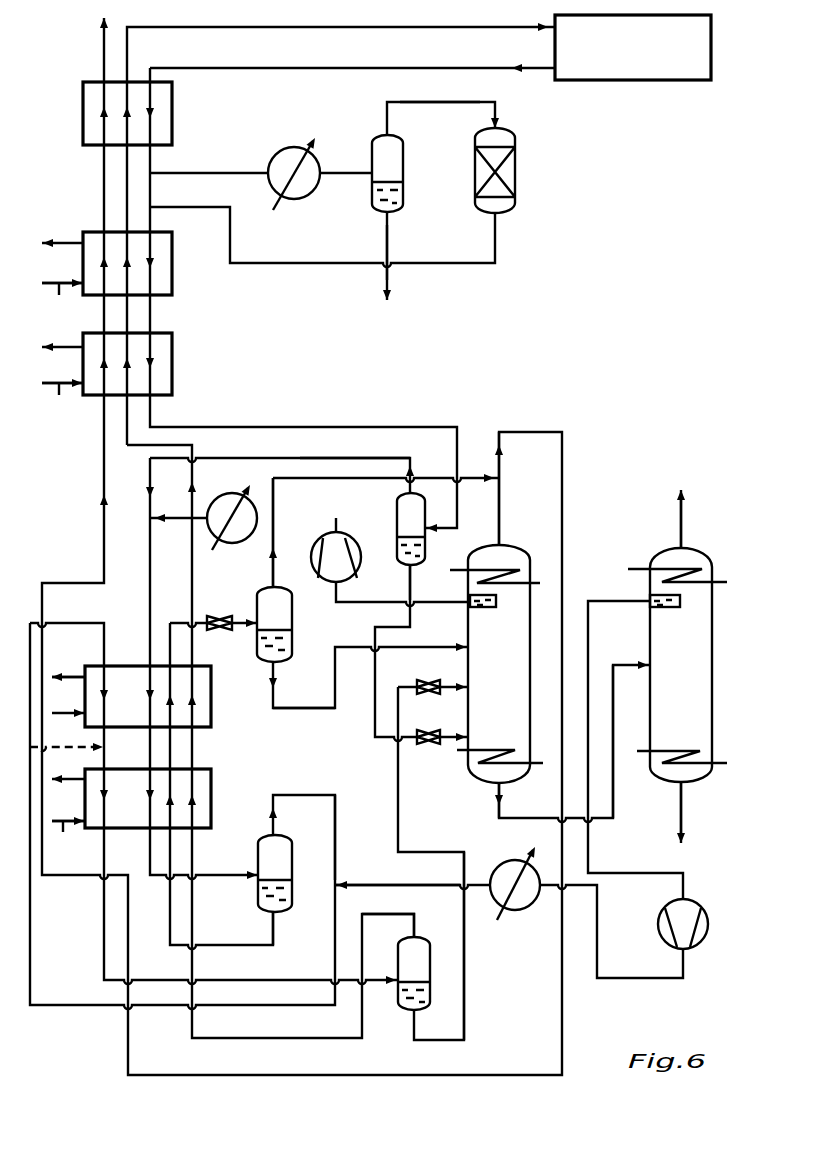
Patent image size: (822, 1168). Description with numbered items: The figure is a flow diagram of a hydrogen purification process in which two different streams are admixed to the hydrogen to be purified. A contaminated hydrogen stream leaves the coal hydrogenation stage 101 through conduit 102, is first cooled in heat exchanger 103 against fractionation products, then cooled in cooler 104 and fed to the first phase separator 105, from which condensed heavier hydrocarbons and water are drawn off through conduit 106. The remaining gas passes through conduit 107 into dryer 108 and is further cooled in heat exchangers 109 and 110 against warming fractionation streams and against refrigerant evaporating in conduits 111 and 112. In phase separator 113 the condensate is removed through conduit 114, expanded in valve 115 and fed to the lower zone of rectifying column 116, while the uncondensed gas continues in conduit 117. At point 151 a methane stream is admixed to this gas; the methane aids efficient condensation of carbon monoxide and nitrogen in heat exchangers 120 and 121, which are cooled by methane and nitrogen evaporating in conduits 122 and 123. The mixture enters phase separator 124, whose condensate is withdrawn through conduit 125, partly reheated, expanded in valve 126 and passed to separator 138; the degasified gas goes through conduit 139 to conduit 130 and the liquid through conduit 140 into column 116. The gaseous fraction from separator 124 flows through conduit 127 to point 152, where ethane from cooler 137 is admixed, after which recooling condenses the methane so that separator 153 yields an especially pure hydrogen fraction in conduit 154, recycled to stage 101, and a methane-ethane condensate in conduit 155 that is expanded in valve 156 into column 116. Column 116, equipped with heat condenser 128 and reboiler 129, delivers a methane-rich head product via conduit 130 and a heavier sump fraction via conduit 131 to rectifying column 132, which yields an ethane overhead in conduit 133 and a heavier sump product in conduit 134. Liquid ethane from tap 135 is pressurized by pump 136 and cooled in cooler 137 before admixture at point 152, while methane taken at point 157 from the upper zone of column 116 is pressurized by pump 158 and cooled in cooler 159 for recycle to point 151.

The coal hydrogenation stage 101 is at (628, 80).
The conduit 102 is at (313, 68).
The heat exchanger 103 is at (172, 108).
The cooler 104 is at (283, 145).
The first phase separator 105 is at (403, 165).
The conduit 106 is at (387, 240).
The conduit 107 is at (444, 103).
The dryer 108 is at (515, 170).
The heat exchanger 109 is at (172, 270).
The heat exchanger 110 is at (172, 366).
The conduit 111 is at (59, 283).
The conduit 112 is at (59, 383).
The phase separator 113 is at (397, 516).
The conduit 114 is at (405, 583).
The valve 115 is at (422, 746).
The rectifying column 116 is at (487, 775).
The conduit 117 is at (410, 448).
The heat exchanger 120 is at (211, 718).
The heat exchanger 121 is at (211, 812).
The conduit 122 is at (72, 677).
The conduit 123 is at (63, 821).
The phase separator 124 is at (258, 860).
The conduit 125 is at (273, 932).
The valve 126 is at (219, 632).
The conduit 127 is at (335, 818).
The heat condenser 128 is at (538, 583).
The reboiler 129 is at (537, 765).
The conduit 130 is at (506, 500).
The conduit 131 is at (616, 805).
The rectifying column 132 is at (705, 652).
The conduit 133 is at (681, 522).
The conduit 134 is at (681, 818).
The tap 135 is at (650, 598).
The pump 136 is at (700, 941).
The cooler 137 is at (513, 910).
The separator 138 is at (292, 620).
The conduit 139 is at (268, 572).
The conduit 140 is at (307, 710).
The admixing point 151 is at (152, 521).
The admixing point 152 is at (352, 869).
The separator 153 is at (400, 956).
The conduit 154 is at (422, 918).
The conduit 155 is at (464, 1000).
The valve 156 is at (425, 695).
The methane withdrawal point 157 is at (470, 606).
The pump 158 is at (349, 540).
The cooler 159 is at (228, 495).